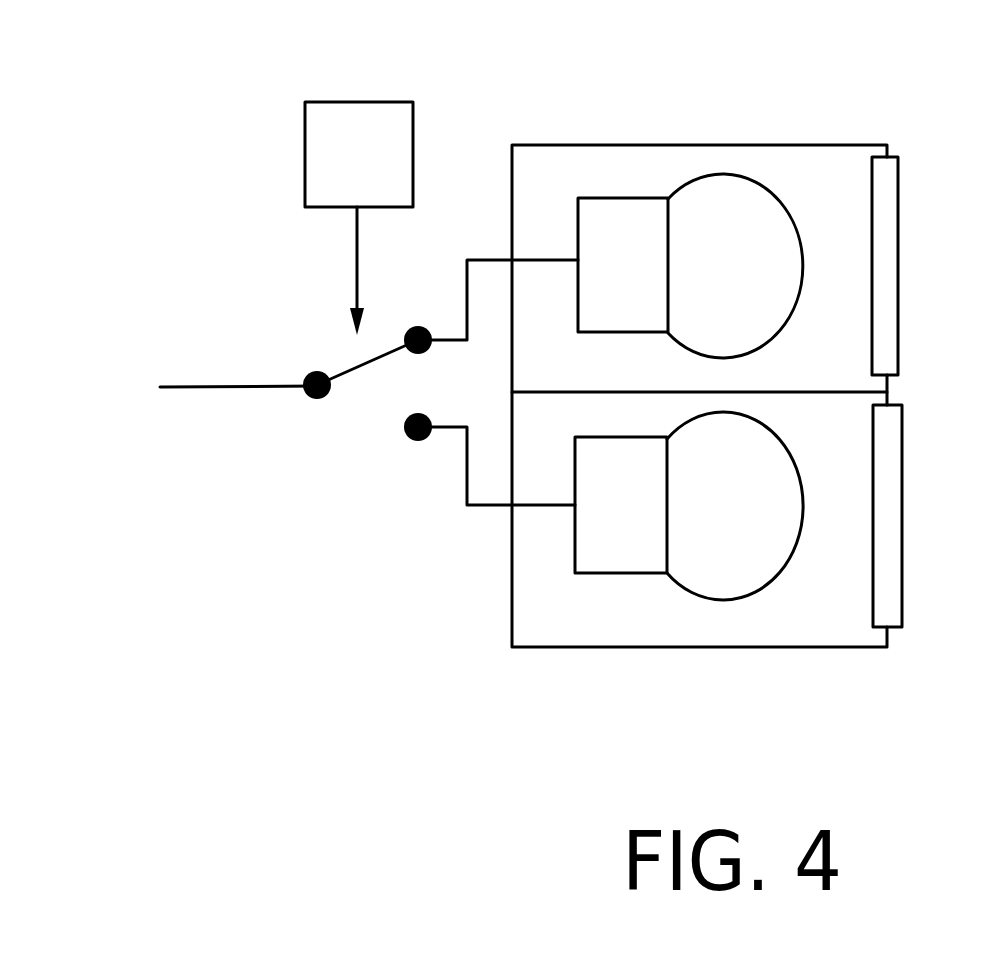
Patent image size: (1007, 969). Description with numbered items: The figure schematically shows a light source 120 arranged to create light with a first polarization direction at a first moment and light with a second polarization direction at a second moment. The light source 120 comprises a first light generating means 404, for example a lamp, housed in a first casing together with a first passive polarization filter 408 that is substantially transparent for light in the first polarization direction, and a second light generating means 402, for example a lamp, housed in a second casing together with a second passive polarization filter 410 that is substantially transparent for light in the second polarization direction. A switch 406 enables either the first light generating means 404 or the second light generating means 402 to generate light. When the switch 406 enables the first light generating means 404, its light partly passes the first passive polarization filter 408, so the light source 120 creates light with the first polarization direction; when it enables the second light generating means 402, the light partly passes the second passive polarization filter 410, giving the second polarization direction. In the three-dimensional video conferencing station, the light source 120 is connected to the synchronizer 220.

The light source 120 is at (808, 143).
The synchronizer 220 is at (357, 101).
The second light generating means 402 is at (703, 568).
The first light generating means 404 is at (698, 190).
The switch 406 is at (371, 432).
The first passive polarization filter 408 is at (888, 277).
The second passive polarization filter 410 is at (892, 537).